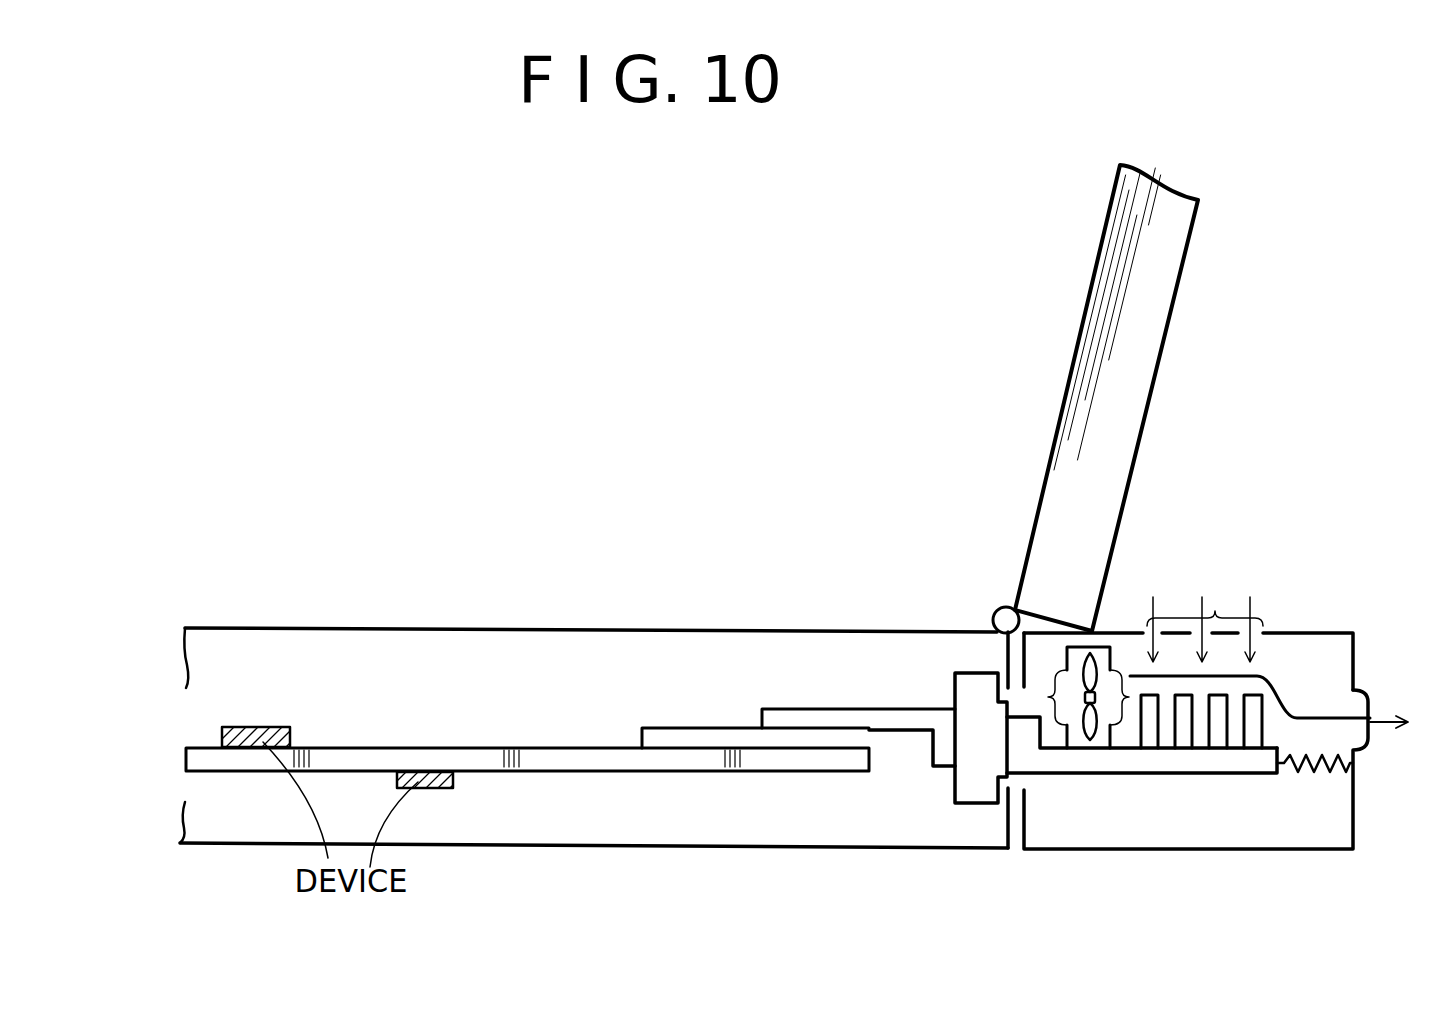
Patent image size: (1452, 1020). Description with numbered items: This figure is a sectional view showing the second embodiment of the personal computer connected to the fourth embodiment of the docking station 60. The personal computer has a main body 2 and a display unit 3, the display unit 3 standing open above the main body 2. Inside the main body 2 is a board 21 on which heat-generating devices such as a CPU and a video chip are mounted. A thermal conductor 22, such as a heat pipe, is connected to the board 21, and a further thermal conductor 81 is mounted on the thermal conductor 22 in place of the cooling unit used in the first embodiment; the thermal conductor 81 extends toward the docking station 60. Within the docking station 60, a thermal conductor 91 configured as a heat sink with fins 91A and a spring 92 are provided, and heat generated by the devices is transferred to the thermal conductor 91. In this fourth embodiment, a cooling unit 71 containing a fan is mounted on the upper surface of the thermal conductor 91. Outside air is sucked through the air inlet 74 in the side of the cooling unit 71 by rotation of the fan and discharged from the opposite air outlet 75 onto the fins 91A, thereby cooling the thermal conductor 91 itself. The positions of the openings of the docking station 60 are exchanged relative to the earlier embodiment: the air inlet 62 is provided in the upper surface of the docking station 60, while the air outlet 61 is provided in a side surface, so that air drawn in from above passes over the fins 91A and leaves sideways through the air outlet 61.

The main body 2 is at (863, 852).
The display unit 3 is at (1067, 387).
The board 21 is at (632, 762).
The thermal conductor 22 is at (700, 737).
The docking station 60 is at (1097, 852).
The air outlet 61 is at (1377, 715).
The air inlet 62 is at (1215, 611).
The cooling unit 71 is at (1062, 645).
The air inlet 74 is at (1047, 697).
The air outlet 75 is at (1129, 672).
The thermal conductor 81 is at (812, 715).
The thermal conductor 91 is at (1153, 760).
The fins 91A is at (1257, 703).
The spring 92 is at (1297, 772).